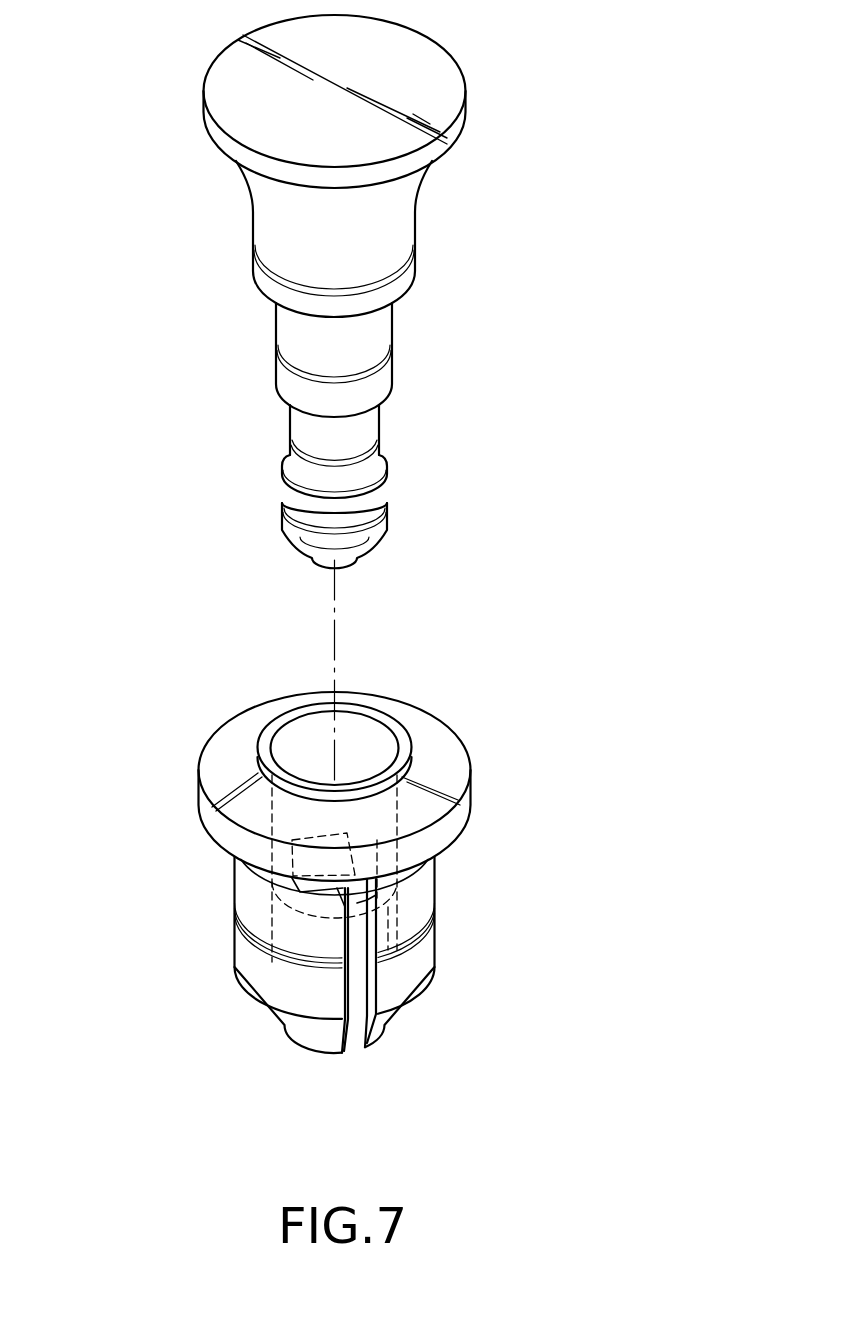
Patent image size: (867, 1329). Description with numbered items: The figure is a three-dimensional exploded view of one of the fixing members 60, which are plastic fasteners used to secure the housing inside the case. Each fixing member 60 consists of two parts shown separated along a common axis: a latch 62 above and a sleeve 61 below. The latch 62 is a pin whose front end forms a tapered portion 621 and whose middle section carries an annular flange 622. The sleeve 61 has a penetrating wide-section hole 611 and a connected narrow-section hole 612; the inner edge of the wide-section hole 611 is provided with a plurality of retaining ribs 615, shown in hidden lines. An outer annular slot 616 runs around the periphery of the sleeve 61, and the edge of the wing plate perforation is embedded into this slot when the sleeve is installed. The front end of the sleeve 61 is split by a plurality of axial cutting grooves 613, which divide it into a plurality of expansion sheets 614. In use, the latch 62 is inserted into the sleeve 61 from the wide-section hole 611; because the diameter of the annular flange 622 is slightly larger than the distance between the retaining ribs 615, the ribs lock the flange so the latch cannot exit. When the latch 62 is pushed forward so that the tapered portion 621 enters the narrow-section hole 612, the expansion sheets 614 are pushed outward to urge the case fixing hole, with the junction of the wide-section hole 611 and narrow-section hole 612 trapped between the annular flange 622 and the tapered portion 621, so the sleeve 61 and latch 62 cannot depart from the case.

The fixing member 60 is at (112, 52).
The latch 62 is at (400, 401).
The tapered portion 621 is at (382, 533).
The annular flange 622 is at (387, 485).
The sleeve 61 is at (347, 883).
The wide-section hole 611 is at (382, 808).
The narrow-section hole 612 is at (350, 1027).
The cutting groove 613 is at (357, 958).
The expansion sheet 614 is at (243, 955).
The retaining rib 615 is at (377, 898).
The outer annular slot 616 is at (258, 870).